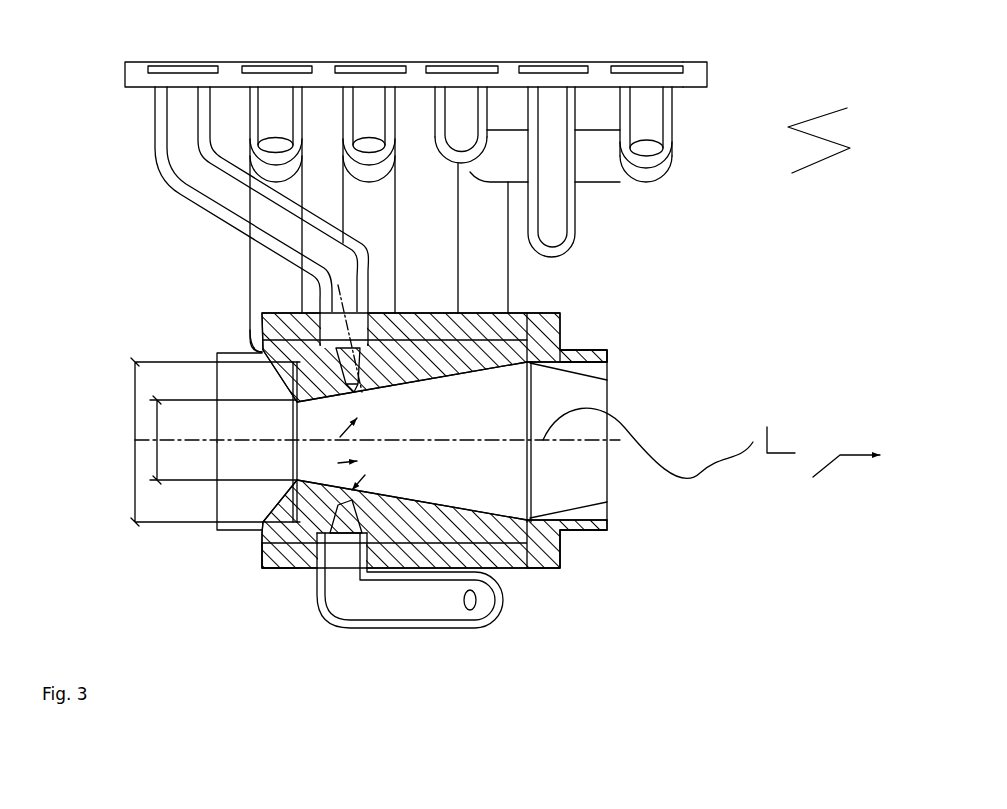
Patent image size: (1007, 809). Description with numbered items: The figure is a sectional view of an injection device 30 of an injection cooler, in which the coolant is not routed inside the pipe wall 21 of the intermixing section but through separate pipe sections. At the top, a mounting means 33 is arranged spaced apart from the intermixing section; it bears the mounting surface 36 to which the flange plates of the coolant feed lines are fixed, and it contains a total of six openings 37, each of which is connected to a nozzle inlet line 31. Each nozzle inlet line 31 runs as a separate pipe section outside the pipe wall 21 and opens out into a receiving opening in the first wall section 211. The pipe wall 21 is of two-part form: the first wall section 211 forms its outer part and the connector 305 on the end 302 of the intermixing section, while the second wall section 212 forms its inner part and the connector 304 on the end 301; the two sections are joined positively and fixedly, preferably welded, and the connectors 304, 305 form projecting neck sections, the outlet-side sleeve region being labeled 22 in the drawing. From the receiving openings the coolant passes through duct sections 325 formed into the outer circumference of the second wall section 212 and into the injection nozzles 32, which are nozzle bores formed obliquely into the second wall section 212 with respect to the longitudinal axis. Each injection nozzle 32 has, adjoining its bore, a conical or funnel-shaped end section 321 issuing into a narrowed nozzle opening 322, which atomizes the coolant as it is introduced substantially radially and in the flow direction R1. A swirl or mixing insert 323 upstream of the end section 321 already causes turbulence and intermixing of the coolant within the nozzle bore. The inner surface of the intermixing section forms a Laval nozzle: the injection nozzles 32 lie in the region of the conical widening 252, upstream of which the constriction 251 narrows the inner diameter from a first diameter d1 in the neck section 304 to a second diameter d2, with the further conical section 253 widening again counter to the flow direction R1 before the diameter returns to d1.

The mounting means 33 is at (232, 62).
The mounting surface 36 is at (699, 61).
The openings 37 is at (284, 70).
The nozzle inlet line 31 is at (298, 88).
The injection device 30 is at (834, 132).
The pipe wall 21 is at (500, 350).
The first wall section 211 is at (490, 327).
The connector 305 is at (600, 357).
The outlet sleeve 22 is at (587, 353).
The second wall section 212 is at (547, 372).
The conical or funnel-shaped widening 252 is at (500, 513).
The constriction 251 is at (315, 497).
The end 301 is at (267, 570).
The end 302 is at (560, 557).
The further conical or funnel-shaped section 253 is at (267, 373).
The connector 304 is at (258, 526).
The duct sections 325 is at (270, 318).
The swirl or mixing insert 323 is at (240, 442).
The first diameter d1 is at (130, 445).
The second diameter d2 is at (157, 442).
The conical or funnel-shaped end section 321 is at (358, 390).
The injection nozzle 32 is at (400, 397).
The nozzle opening 322 is at (351, 450).
The flow direction R1 is at (823, 463).